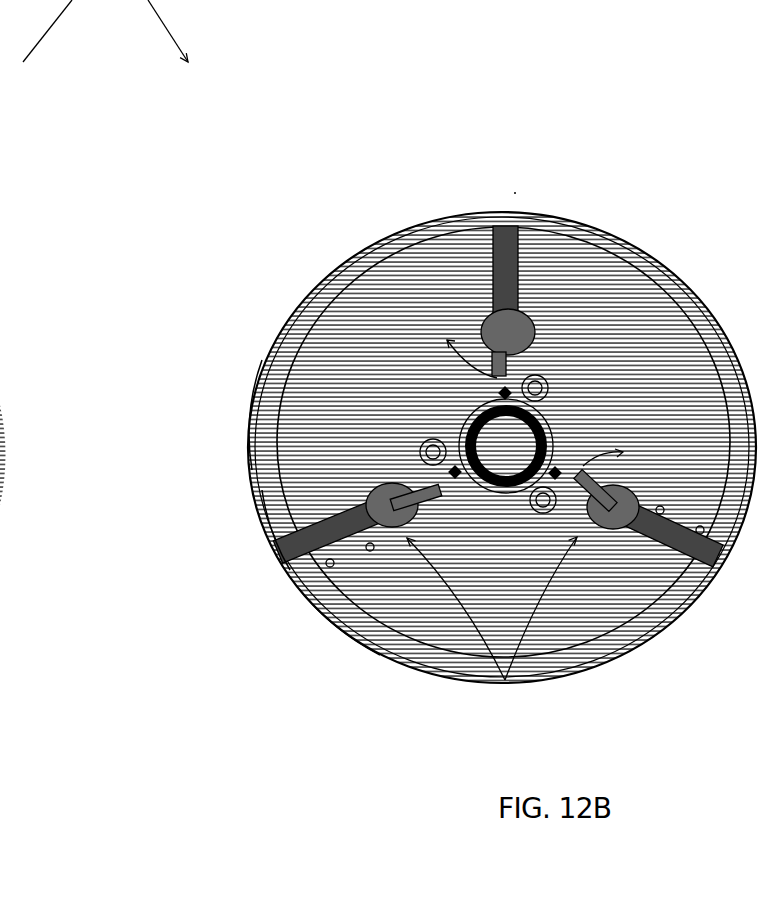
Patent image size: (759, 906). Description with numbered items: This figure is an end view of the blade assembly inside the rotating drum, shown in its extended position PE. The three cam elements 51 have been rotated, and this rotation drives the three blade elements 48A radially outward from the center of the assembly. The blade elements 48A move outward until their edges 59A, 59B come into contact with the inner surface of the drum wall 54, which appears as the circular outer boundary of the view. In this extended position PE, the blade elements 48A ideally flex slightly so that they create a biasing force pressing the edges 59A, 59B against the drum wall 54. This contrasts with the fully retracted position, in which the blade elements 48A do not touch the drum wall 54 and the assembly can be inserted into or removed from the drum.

The drum wall 54 is at (293, 305).
The cam element 51 is at (552, 308).
The edge 59B is at (252, 495).
The blade element 48A is at (275, 535).
The edge 59A is at (338, 623).
The extended position PE is at (515, 190).